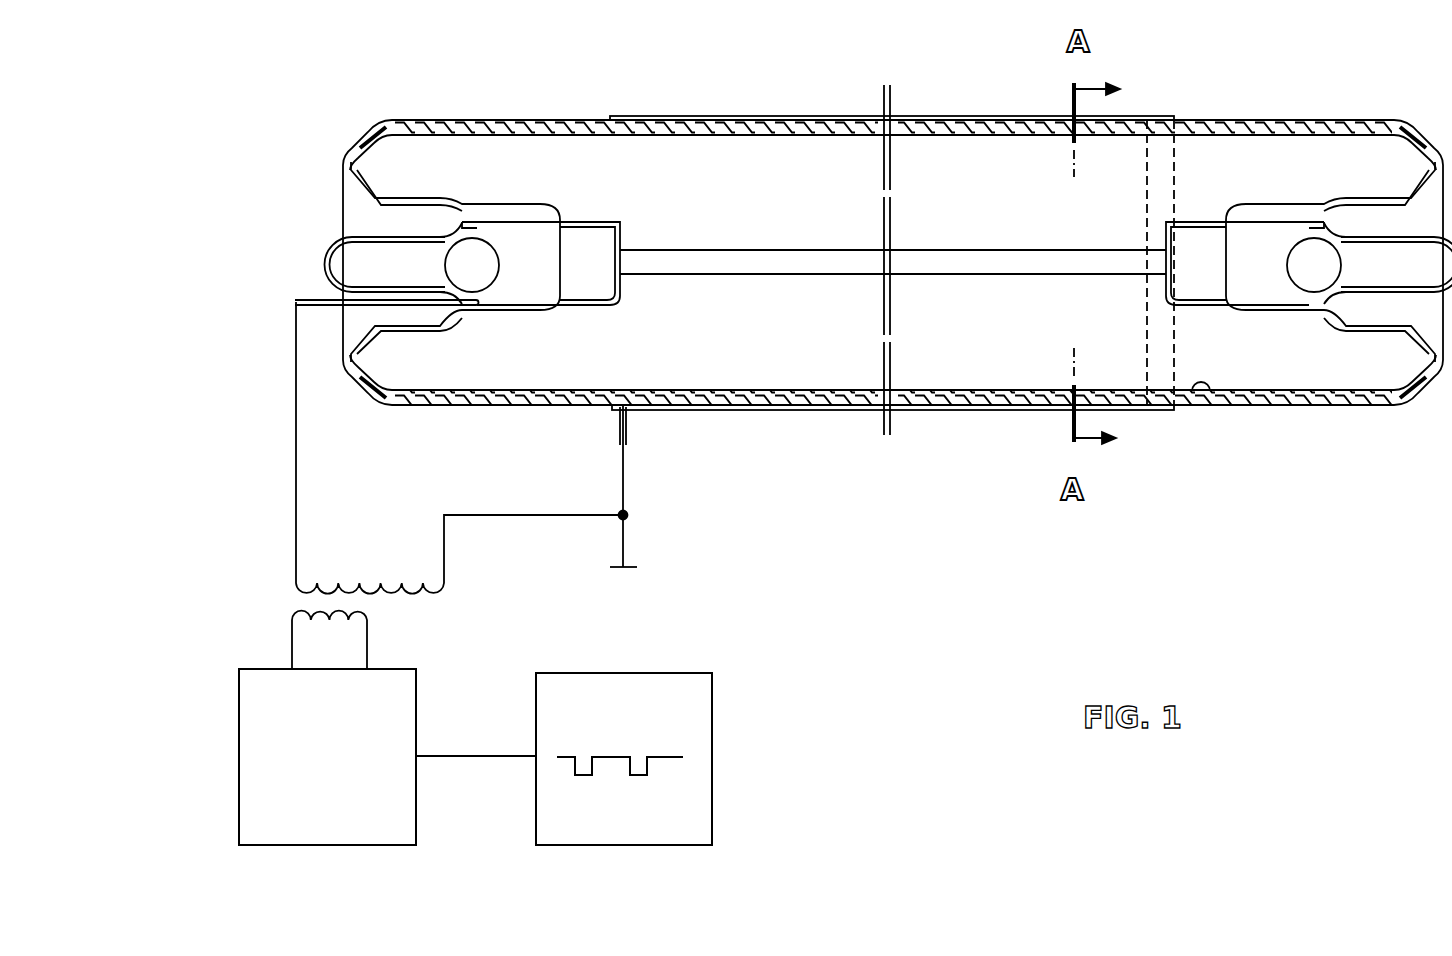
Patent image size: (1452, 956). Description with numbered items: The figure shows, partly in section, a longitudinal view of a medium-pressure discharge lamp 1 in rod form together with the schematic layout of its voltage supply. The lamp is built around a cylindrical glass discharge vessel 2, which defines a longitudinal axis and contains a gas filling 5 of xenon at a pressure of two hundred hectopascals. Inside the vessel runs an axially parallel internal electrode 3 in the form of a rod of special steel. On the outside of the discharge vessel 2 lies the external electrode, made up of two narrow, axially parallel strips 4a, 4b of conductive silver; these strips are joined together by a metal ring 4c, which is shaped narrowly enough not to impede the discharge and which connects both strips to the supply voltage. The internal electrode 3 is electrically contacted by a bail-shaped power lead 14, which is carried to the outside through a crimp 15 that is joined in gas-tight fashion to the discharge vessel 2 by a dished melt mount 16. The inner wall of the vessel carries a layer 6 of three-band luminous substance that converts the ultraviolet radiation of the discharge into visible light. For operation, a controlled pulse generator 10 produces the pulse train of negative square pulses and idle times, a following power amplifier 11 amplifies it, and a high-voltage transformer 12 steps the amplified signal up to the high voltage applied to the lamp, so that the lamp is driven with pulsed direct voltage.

The discharge lamp 1 is at (1005, 428).
The discharge vessel 2 is at (805, 395).
The internal electrode 3 is at (729, 262).
The conductive silver strip 4a is at (955, 118).
The conductive silver strip 4b is at (932, 408).
The metal ring 4c is at (1175, 342).
The gas filling 5 is at (810, 173).
The layer of luminous substance 6 is at (1211, 392).
The pulse generator 10 is at (688, 786).
The power amplifier 11 is at (265, 752).
The high-voltage transformer 12 is at (292, 598).
The power lead 14 is at (601, 222).
The crimp 15 is at (512, 247).
The melt mount 16 is at (354, 150).